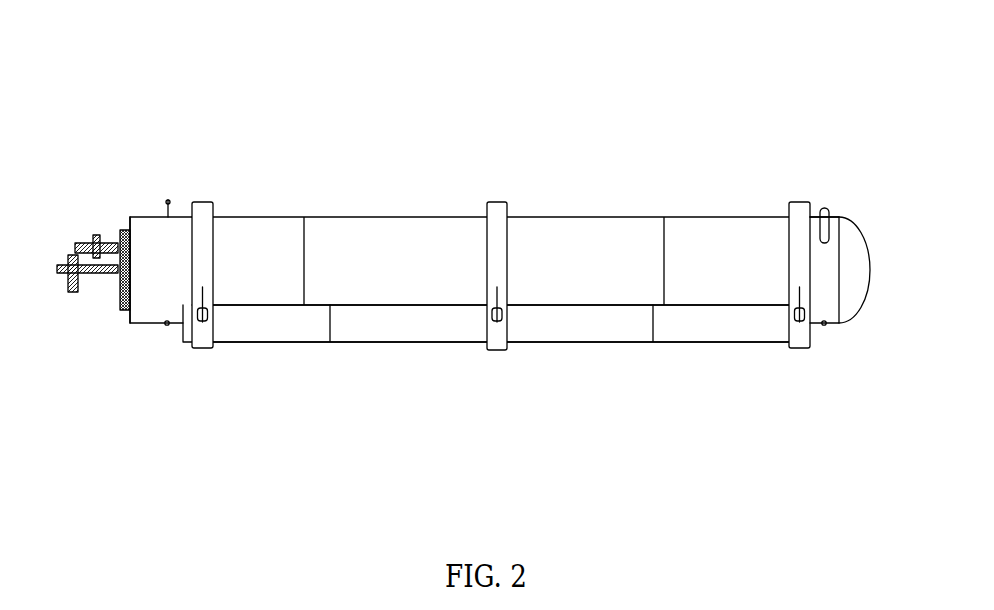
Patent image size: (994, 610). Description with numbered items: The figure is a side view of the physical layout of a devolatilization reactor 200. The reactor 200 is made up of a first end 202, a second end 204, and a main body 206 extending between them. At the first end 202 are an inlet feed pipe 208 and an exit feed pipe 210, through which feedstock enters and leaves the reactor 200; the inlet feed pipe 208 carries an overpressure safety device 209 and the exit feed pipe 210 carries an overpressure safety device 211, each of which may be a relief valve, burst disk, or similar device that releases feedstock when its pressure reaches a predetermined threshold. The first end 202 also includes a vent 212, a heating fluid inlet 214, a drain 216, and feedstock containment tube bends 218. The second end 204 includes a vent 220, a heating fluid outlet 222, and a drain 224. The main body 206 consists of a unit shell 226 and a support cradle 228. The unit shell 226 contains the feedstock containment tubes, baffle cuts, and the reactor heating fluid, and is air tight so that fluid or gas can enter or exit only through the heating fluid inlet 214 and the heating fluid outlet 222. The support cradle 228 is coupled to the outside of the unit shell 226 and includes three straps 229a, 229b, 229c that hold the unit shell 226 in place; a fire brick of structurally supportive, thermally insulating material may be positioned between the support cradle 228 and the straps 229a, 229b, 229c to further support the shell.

The devolatilization reactor 200 is at (284, 72).
The first end 202 is at (128, 257).
The second end 204 is at (830, 250).
The main body 206 is at (501, 220).
The inlet feed pipe 208 is at (107, 284).
The overpressure safety device 209 is at (73, 283).
The exit feed pipe 210 is at (108, 234).
The overpressure safety device 211 is at (102, 236).
The vent 212 is at (169, 199).
The heating fluid inlet 214 is at (171, 216).
The drain 216 is at (169, 326).
The feedstock containment tube bends 218 is at (121, 306).
The vent 220 is at (825, 204).
The heating fluid outlet 222 is at (830, 221).
The drain 224 is at (825, 327).
The unit shell 226 is at (334, 237).
The support cradle 228 is at (567, 325).
The strap 229a is at (203, 235).
The strap 229b is at (500, 245).
The strap 229c is at (795, 235).